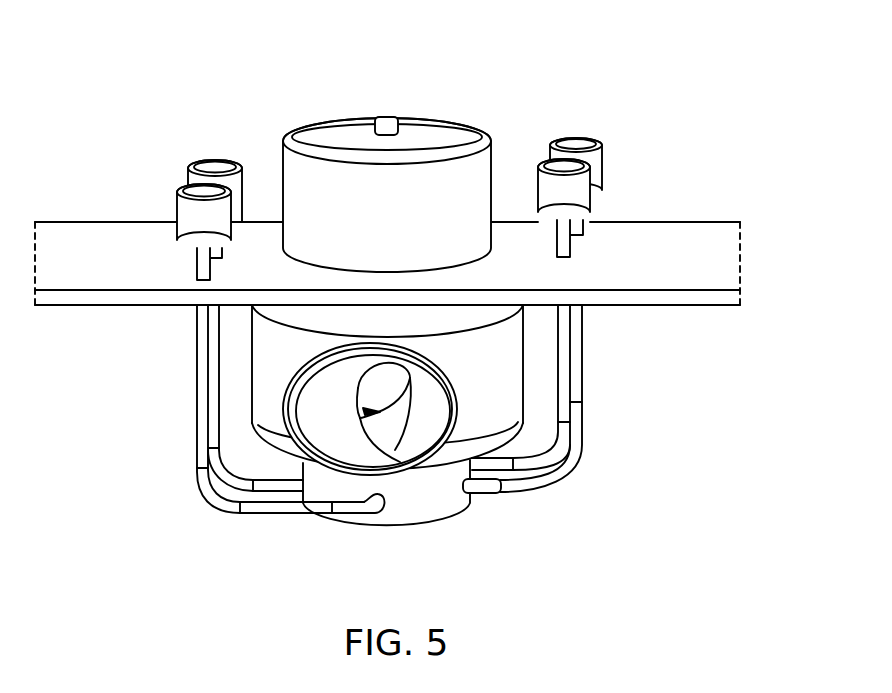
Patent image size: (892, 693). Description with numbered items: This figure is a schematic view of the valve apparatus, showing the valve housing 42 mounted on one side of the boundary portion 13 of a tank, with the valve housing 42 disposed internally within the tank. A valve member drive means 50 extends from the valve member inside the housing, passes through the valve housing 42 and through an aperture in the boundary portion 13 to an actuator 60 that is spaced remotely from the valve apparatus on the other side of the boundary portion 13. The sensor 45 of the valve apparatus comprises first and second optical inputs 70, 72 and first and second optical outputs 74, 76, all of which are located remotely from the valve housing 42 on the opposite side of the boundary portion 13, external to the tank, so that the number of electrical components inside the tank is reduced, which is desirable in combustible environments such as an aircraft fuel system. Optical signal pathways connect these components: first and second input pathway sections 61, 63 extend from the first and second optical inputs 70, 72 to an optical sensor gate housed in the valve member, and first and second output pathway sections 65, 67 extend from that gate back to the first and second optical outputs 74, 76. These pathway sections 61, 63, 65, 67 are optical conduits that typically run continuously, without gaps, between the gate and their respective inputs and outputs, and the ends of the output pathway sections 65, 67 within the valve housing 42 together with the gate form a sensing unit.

The boundary portion 13 is at (728, 262).
The valve housing 42 is at (527, 377).
The sensor 45 is at (460, 540).
The valve member drive means 50 is at (388, 116).
The actuator 60 is at (470, 126).
The first input pathway section 61 is at (585, 368).
The second input pathway section 63 is at (532, 487).
The first output pathway section 65 is at (260, 517).
The second output pathway section 67 is at (222, 442).
The first optical input 70 is at (604, 158).
The second optical input 72 is at (583, 188).
The first optical output 74 is at (187, 188).
The second optical output 76 is at (212, 163).